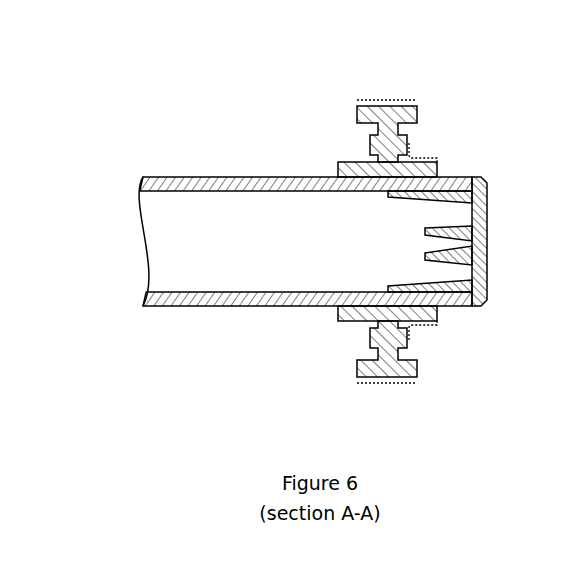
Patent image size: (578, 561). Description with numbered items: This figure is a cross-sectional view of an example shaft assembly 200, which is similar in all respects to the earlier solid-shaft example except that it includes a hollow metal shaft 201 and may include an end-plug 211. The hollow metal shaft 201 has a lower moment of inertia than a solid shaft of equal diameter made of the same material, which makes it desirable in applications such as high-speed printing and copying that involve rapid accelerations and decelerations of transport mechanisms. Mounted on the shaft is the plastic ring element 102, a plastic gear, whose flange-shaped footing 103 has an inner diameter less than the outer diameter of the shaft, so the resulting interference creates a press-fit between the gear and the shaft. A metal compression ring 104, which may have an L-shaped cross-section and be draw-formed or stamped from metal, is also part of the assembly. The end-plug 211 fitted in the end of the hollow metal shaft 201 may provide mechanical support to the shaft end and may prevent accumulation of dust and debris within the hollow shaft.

The shaft assembly 200 is at (160, 86).
The hollow metal shaft 201 is at (190, 303).
The plastic ring element 102 is at (420, 110).
The flange-shaped footing 103 is at (331, 159).
The metal compression ring 104 is at (427, 155).
The end-plug 211 is at (487, 253).